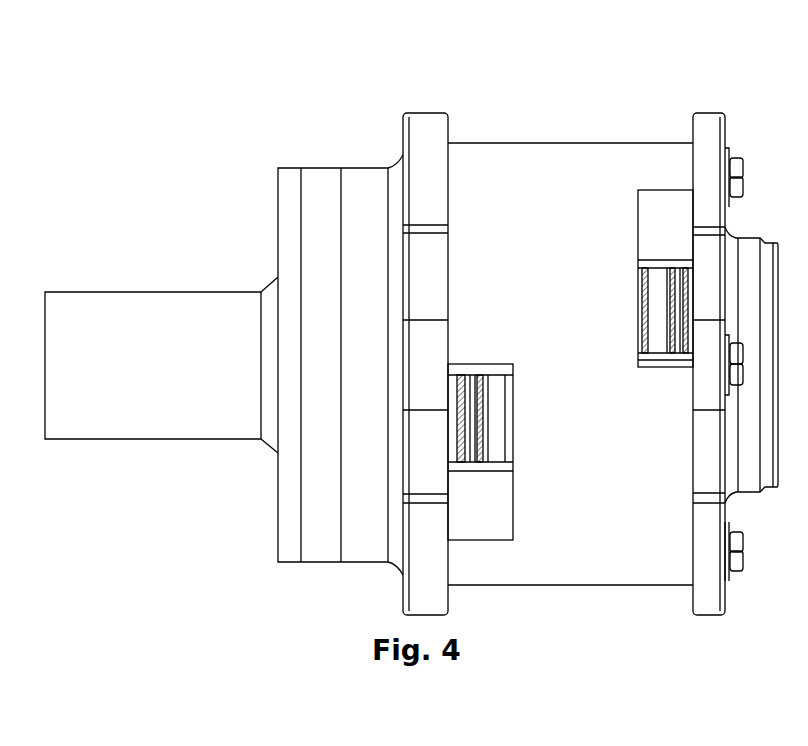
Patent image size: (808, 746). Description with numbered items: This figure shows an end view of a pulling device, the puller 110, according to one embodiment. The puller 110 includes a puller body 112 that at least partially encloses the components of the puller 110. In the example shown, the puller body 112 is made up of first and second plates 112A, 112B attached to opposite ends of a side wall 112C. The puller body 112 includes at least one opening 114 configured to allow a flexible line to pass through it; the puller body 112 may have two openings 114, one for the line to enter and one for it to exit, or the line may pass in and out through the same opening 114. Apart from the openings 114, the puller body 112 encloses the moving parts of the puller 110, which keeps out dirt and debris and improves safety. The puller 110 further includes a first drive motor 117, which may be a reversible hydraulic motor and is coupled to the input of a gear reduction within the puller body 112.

The puller 110 is at (690, 70).
The puller body 112 is at (510, 168).
The first plate 112A is at (420, 130).
The second plate 112B is at (712, 120).
The side wall 112C is at (610, 575).
The opening 114 is at (662, 265).
The first drive motor 117 is at (138, 423).